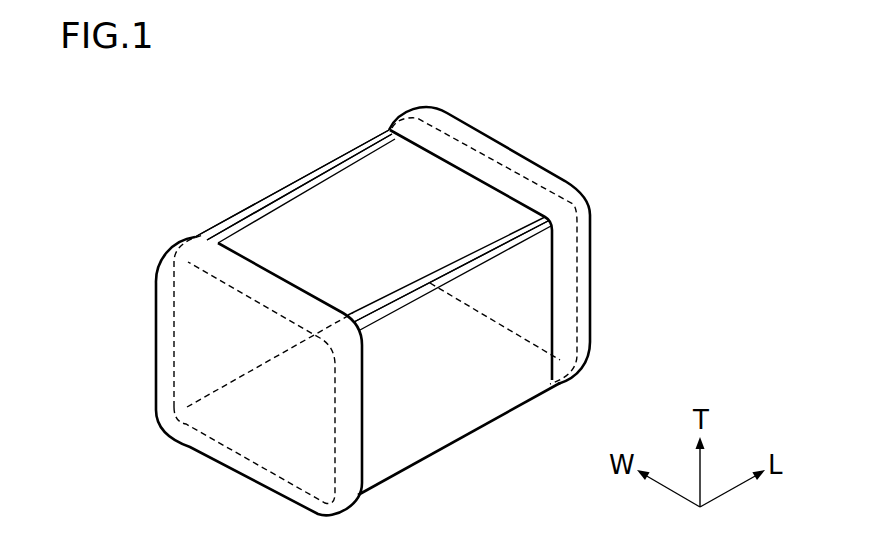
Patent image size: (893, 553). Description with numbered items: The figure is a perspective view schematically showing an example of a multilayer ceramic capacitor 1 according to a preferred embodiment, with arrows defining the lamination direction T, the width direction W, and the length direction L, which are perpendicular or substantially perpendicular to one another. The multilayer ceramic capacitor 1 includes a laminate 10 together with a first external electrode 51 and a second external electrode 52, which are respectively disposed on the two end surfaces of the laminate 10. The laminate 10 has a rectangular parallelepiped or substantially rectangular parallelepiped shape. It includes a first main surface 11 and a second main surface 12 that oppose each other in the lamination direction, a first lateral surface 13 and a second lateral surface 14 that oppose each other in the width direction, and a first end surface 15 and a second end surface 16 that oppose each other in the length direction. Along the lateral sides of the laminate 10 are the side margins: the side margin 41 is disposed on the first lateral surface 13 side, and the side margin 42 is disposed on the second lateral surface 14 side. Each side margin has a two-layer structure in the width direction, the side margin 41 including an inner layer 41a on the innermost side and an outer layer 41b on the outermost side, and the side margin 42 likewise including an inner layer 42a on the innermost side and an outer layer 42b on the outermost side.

The multilayer ceramic capacitor 1 is at (393, 294).
The laminate 10 is at (434, 294).
The first main surface 11 is at (385, 202).
The second main surface 12 is at (459, 448).
The first lateral surface 13 is at (461, 356).
The second lateral surface 14 is at (292, 183).
The first end surface 15 is at (263, 382).
The second end surface 16 is at (486, 239).
The side margin 41 is at (539, 269).
The inner layer 41a is at (511, 266).
The outer layer 41b is at (514, 275).
The side margin 42 is at (267, 185).
The inner layer 42a is at (293, 185).
The outer layer 42b is at (272, 188).
The first external electrode 51 is at (228, 376).
The second external electrode 52 is at (526, 245).